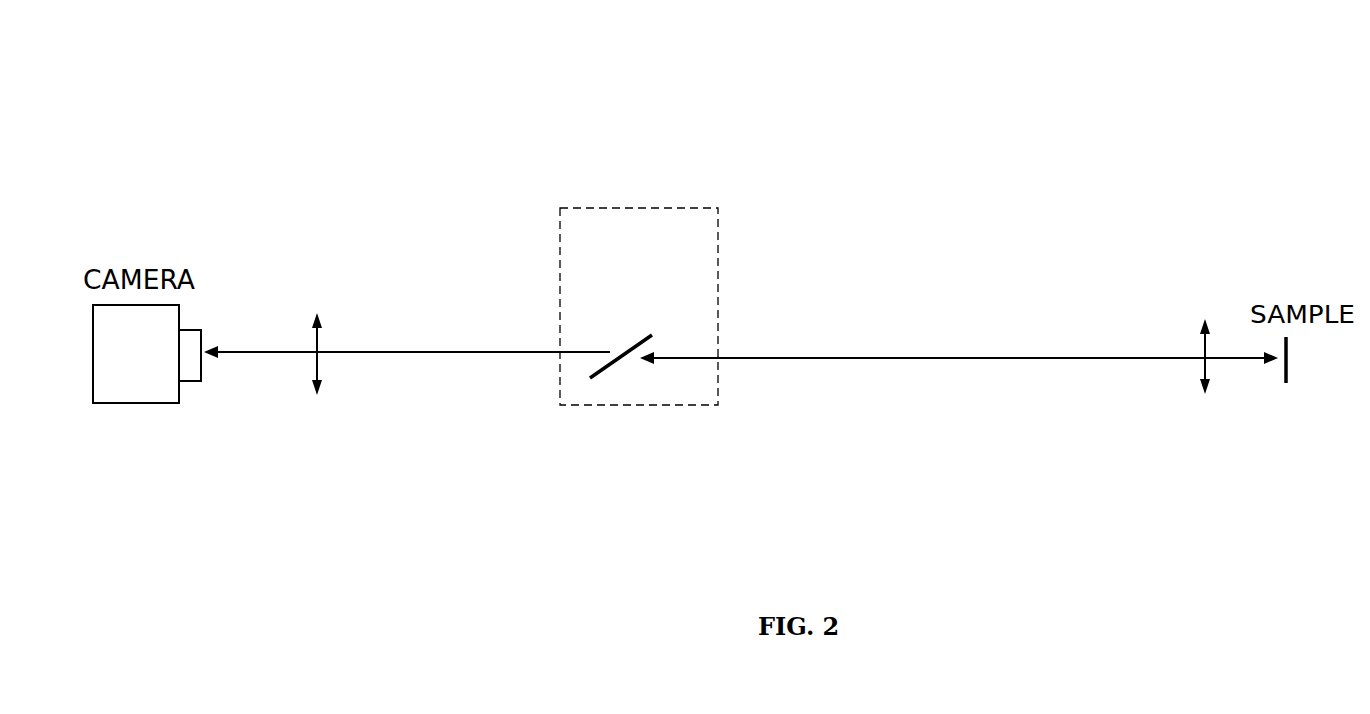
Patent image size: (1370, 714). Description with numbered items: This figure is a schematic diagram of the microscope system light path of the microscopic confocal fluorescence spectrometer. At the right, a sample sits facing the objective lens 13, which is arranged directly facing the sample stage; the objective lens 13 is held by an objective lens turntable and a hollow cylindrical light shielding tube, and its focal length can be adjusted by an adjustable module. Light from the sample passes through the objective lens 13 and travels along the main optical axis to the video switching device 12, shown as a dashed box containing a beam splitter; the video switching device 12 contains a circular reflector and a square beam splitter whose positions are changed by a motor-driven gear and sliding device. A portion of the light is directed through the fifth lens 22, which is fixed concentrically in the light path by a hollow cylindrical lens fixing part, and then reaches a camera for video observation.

The video switching device 12 is at (700, 230).
The fifth lens 22 is at (340, 412).
The objective lens 13 is at (1251, 412).